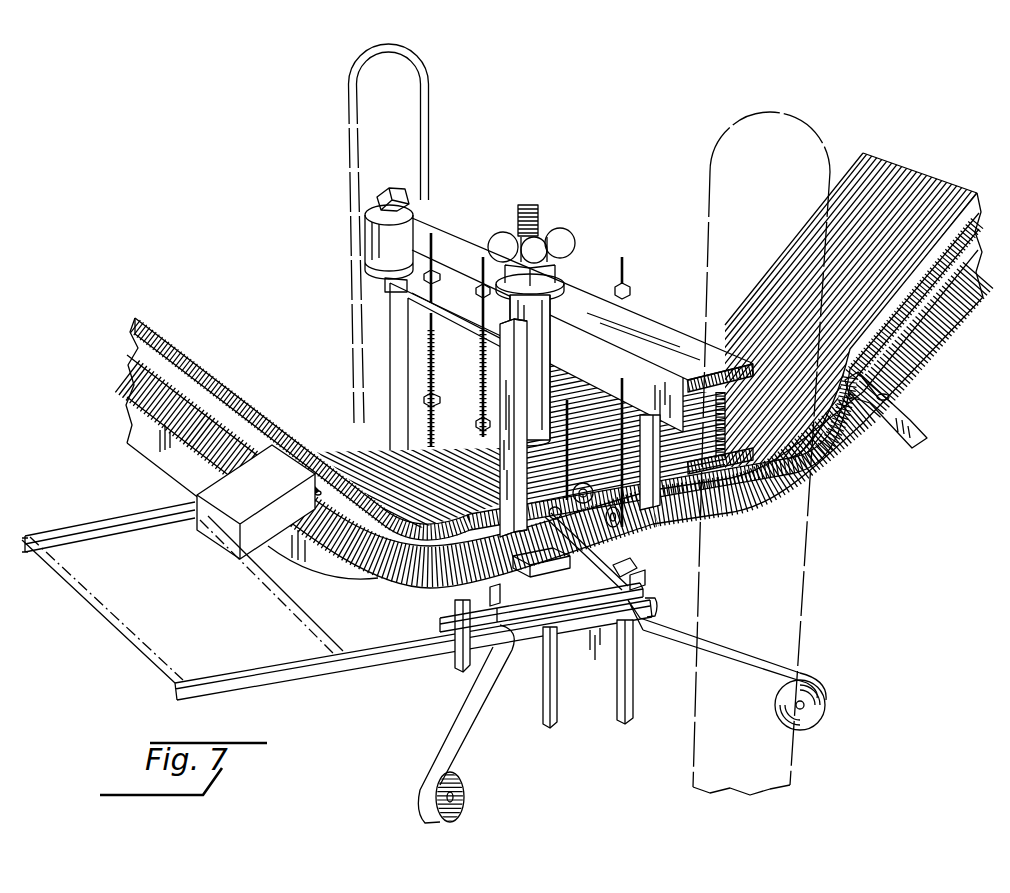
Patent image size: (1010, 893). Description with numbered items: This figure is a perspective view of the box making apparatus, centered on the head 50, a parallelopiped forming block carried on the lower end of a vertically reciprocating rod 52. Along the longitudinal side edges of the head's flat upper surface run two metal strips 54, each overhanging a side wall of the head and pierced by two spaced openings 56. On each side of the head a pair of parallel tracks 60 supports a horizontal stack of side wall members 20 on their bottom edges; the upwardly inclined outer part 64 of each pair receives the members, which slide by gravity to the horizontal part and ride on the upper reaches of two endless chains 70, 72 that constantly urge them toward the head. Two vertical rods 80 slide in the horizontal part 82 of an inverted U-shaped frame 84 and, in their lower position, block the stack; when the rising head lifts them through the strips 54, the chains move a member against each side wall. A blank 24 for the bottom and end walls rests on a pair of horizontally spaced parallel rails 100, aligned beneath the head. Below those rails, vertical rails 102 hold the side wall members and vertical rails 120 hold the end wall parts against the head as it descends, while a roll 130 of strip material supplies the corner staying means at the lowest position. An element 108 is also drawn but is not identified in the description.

The side wall member 20 is at (343, 455).
The blank 24 is at (152, 633).
The head 50 is at (572, 592).
The rod 52 is at (549, 215).
The metal strip 54 is at (610, 557).
The opening 56 is at (563, 516).
The track 60 is at (172, 462).
The upwardly inclined outer part 64 is at (182, 479).
The endless chain 70 is at (573, 498).
The endless chain 72 is at (606, 525).
The vertical rod 80 is at (619, 278).
The horizontal part 82 is at (452, 313).
The frame 84 is at (507, 380).
The rail 100 is at (148, 540).
The vertical rail 102 is at (440, 697).
The arm 108 is at (477, 703).
The vertical rail 120 is at (617, 687).
The roll 130 is at (460, 795).